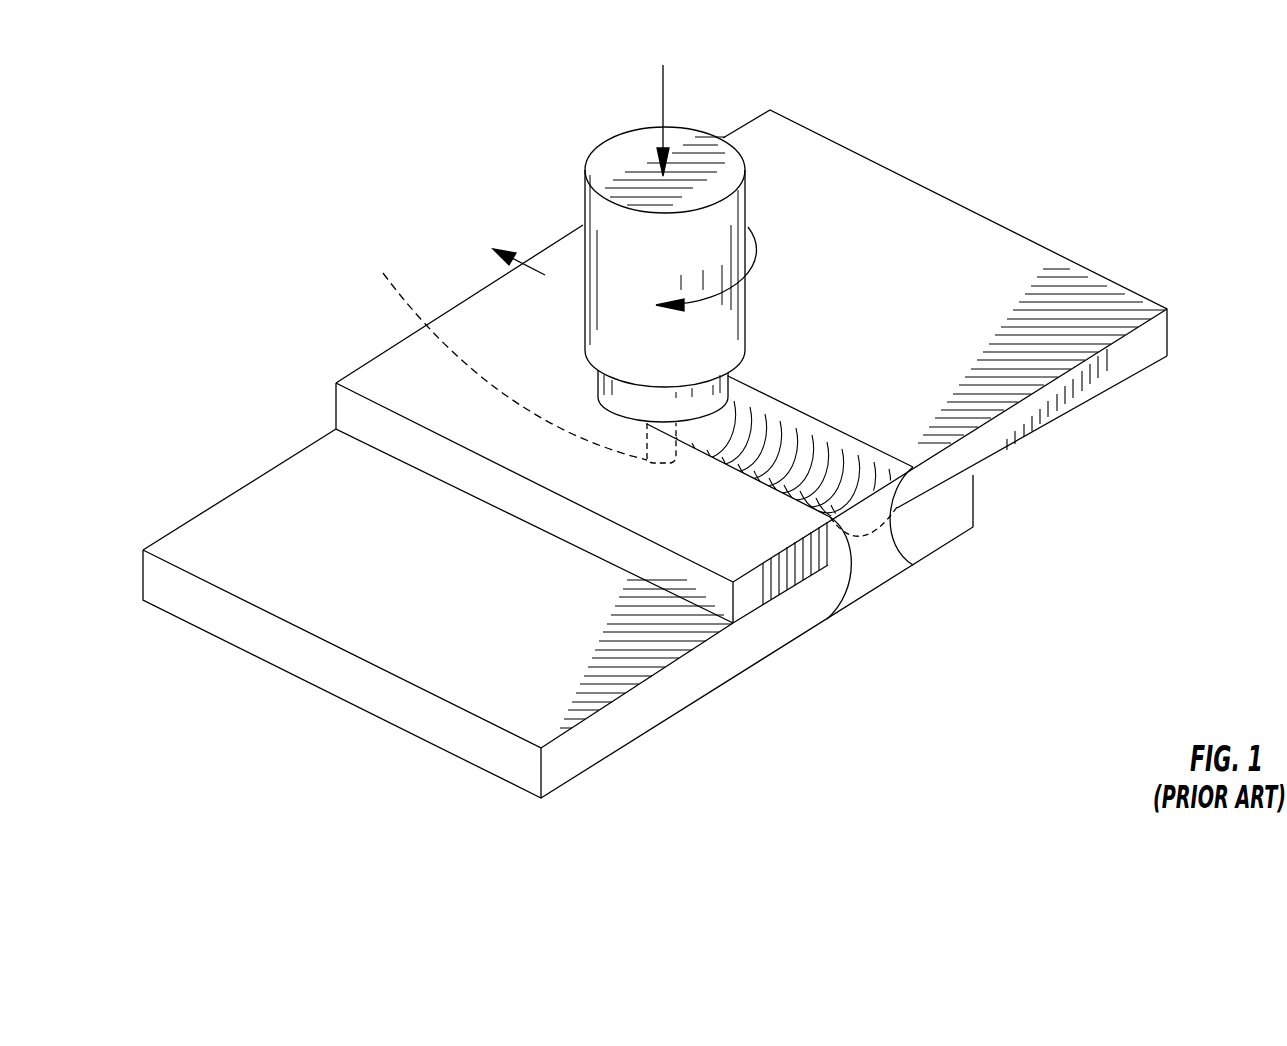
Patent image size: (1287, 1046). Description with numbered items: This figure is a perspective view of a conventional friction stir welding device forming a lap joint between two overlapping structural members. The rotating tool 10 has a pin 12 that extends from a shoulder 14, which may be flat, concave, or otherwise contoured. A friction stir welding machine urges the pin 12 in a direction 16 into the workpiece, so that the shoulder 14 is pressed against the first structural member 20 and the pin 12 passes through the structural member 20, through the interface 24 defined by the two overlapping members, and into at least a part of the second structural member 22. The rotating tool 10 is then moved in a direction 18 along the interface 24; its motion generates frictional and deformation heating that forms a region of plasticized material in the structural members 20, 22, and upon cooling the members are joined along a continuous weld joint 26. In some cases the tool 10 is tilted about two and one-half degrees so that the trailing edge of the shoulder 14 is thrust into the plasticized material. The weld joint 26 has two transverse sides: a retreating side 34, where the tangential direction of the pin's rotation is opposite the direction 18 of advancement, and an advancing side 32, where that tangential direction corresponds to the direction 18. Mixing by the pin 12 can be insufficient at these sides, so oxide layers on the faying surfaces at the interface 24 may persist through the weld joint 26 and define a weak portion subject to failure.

The tool 10 is at (593, 150).
The pin 12 is at (508, 350).
The shoulder 14 is at (730, 407).
The direction 16 is at (667, 101).
The direction 18 is at (541, 272).
The structural member 20 is at (1007, 225).
The structural member 22 is at (382, 703).
The interface 24 is at (920, 507).
The weld joint 26 is at (873, 572).
The advancing side 32 is at (722, 478).
The retreating side 34 is at (830, 400).